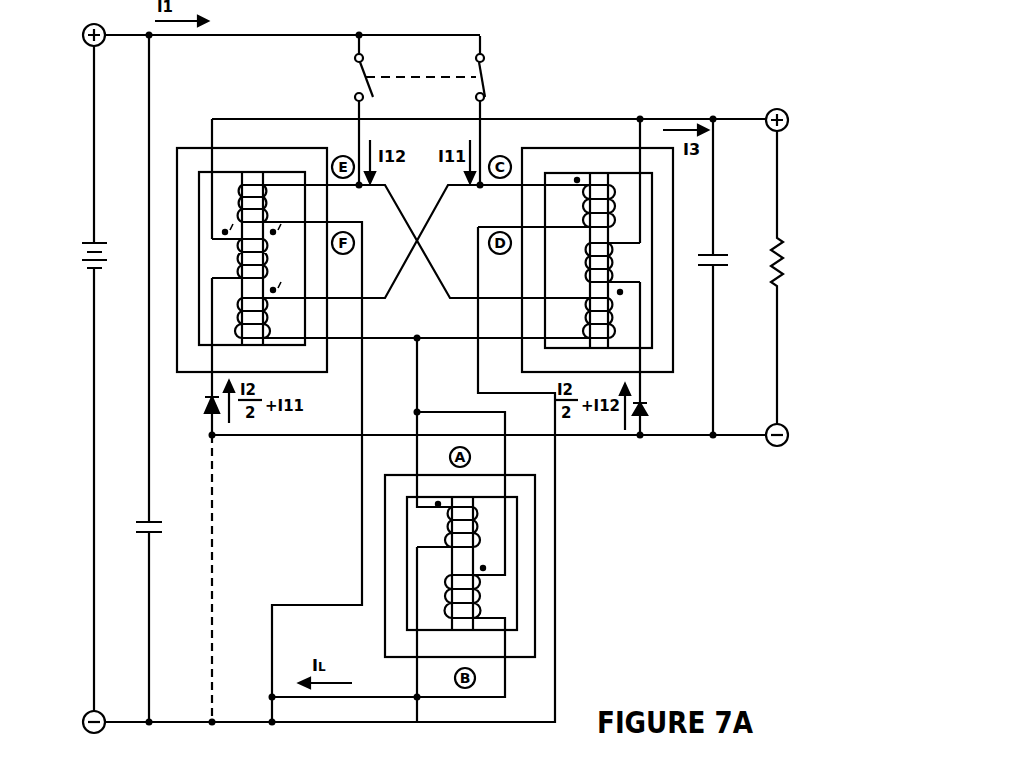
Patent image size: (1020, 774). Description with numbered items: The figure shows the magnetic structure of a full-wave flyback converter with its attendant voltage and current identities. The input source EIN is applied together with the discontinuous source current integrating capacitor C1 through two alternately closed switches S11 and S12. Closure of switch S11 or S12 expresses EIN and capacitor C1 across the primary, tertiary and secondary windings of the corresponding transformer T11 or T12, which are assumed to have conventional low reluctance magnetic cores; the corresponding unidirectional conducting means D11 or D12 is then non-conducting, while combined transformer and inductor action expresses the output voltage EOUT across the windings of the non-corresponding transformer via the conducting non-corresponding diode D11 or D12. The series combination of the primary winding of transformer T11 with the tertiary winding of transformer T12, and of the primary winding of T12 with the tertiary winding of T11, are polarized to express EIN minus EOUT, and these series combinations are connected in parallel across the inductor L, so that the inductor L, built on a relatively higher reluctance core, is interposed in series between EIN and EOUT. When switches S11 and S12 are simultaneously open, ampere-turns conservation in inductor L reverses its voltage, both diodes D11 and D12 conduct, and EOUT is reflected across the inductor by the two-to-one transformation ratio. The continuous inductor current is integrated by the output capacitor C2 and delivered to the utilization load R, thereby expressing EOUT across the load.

The transformer T12 is at (252, 260).
The transformer T11 is at (597, 261).
The switch S12 is at (346, 110).
The switch S11 is at (500, 110).
The unidirectional conducting means D12 is at (192, 416).
The unidirectional conducting means D11 is at (664, 418).
The source current integrating capacitor C1 is at (163, 530).
The capacitor C2 is at (702, 277).
The utilization load R is at (750, 277).
The inductor L is at (403, 530).
The source voltage EIN is at (60, 267).
The output voltage EOUT is at (799, 277).